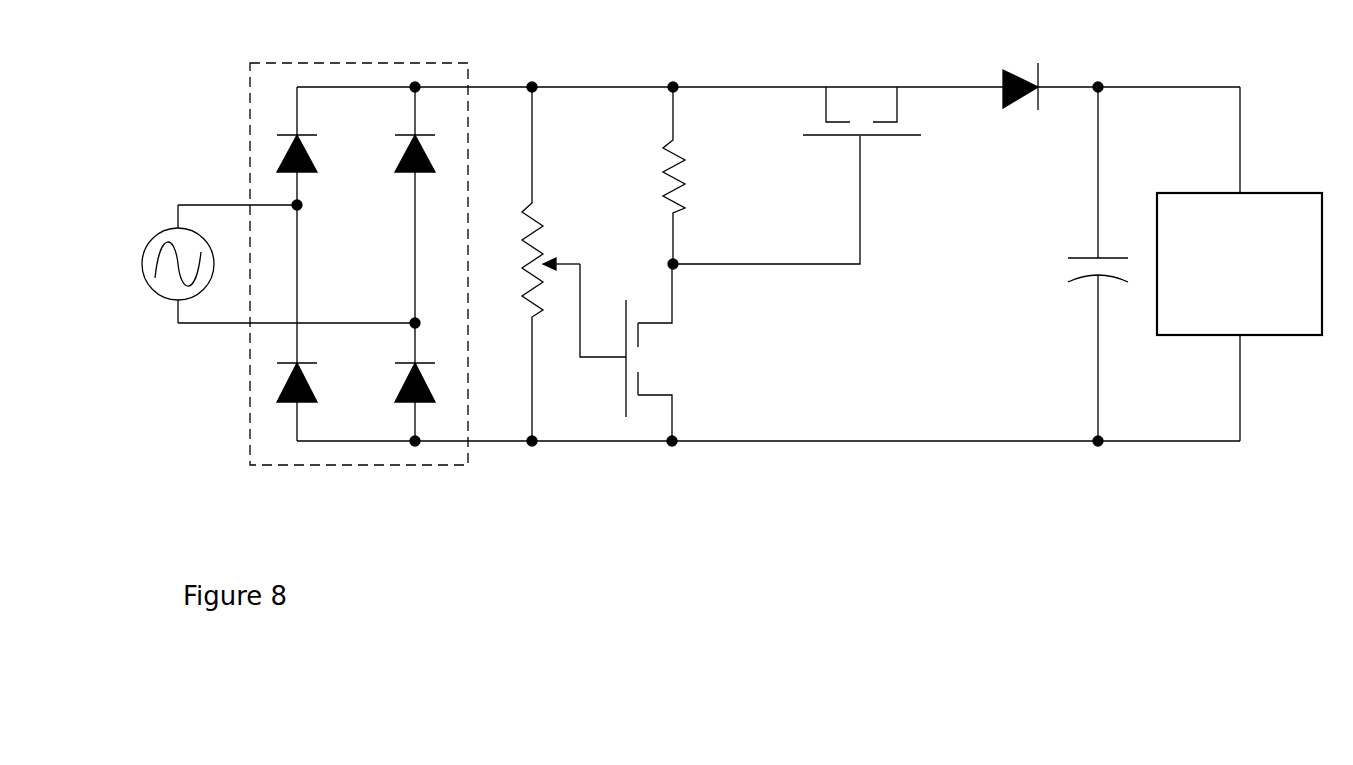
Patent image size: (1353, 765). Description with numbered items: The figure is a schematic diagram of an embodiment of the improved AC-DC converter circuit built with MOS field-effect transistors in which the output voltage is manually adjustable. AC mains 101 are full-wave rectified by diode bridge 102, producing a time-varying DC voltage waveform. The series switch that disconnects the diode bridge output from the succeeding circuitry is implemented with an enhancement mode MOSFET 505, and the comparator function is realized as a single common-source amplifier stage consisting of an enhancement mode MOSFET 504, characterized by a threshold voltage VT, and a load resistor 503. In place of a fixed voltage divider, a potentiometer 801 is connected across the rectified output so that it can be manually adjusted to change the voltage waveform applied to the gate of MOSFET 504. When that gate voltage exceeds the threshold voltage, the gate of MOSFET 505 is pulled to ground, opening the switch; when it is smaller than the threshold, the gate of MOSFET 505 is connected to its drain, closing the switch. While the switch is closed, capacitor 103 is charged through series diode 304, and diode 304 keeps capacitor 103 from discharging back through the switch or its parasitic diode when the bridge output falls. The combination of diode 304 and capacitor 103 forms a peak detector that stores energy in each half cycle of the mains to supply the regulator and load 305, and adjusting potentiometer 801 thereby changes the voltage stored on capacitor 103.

The AC mains 101 is at (148, 252).
The diode bridge 102 is at (367, 63).
The capacitor 103 is at (1060, 263).
The series diode 304 is at (1018, 63).
The load 305 is at (1218, 190).
The load resistor 503 is at (692, 182).
The MOSFET 504 is at (673, 357).
The MOSFET 505 is at (920, 147).
The potentiometer 801 is at (550, 233).